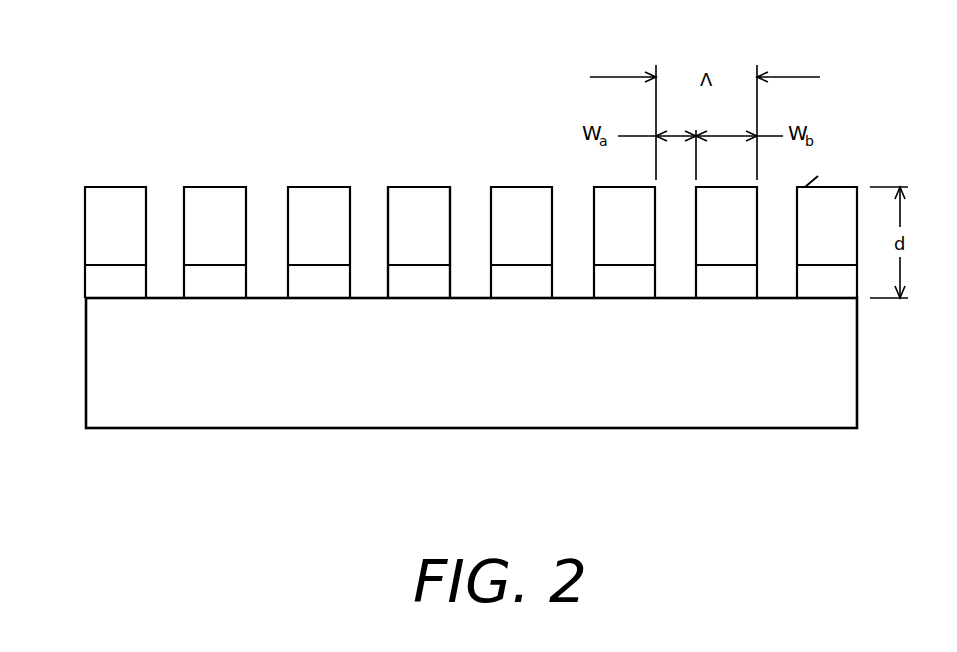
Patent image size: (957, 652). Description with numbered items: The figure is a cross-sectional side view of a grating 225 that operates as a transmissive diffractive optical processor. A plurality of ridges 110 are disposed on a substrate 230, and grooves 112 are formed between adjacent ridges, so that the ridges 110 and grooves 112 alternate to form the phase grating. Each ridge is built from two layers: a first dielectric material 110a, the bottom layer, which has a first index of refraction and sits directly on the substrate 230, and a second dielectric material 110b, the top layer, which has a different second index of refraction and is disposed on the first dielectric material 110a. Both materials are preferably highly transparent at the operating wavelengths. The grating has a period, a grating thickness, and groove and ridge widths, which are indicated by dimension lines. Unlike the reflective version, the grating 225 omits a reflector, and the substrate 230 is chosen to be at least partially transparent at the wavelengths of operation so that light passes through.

The ridges 110 is at (450, 185).
The first dielectric material 110a is at (85, 295).
The second dielectric material 110b is at (85, 198).
The grooves 112 is at (491, 185).
The grating 225 is at (436, 177).
The substrate 230 is at (565, 429).